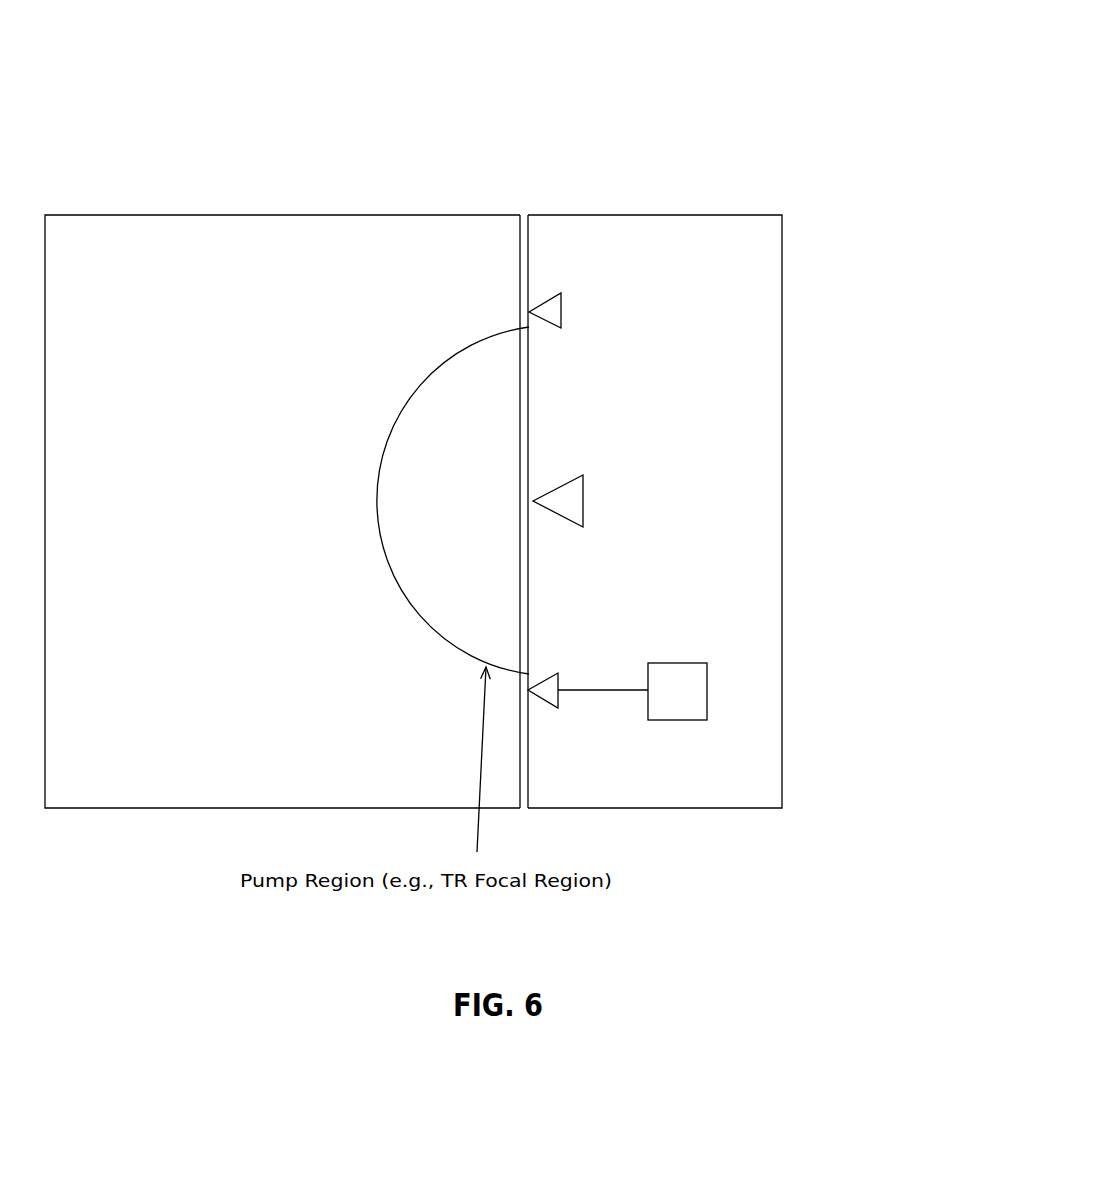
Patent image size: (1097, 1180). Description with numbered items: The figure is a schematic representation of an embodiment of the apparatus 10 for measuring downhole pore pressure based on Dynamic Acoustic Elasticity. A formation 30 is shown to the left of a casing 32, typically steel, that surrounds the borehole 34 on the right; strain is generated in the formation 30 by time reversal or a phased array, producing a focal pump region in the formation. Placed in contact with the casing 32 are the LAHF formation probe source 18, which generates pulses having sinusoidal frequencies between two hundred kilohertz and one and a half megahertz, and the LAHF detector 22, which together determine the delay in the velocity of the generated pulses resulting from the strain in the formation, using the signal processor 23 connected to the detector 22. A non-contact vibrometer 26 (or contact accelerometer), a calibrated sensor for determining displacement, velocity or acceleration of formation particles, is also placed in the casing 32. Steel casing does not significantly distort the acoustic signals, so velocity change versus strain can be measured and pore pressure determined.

The apparatus 10 is at (697, 143).
The LAHF formation probe source 18 is at (565, 303).
The LAHF detector 22 is at (563, 697).
The signal processor 23 is at (697, 704).
The non-contact vibrometer 26 is at (591, 508).
The formation 30 is at (355, 215).
The casing 32 is at (527, 215).
The borehole 34 is at (720, 217).